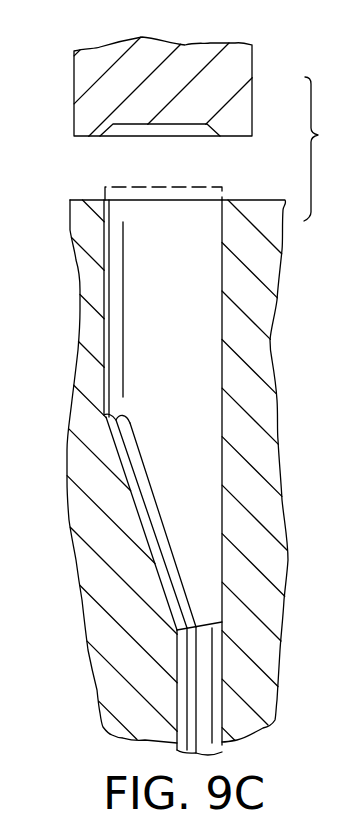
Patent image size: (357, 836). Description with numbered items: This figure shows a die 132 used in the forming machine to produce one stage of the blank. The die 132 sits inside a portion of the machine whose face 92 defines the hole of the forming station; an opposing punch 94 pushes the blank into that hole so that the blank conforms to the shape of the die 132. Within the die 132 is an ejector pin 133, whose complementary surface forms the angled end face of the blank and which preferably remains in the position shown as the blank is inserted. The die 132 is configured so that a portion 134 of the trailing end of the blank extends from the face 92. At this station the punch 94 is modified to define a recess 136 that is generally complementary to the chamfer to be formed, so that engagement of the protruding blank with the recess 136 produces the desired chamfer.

The punch 94 is at (252, 100).
The face 92 is at (253, 200).
The recess 136 is at (133, 129).
The portion of the trailing end of blank 134 is at (105, 192).
The die 132 is at (219, 370).
The ejector pin 133 is at (210, 682).